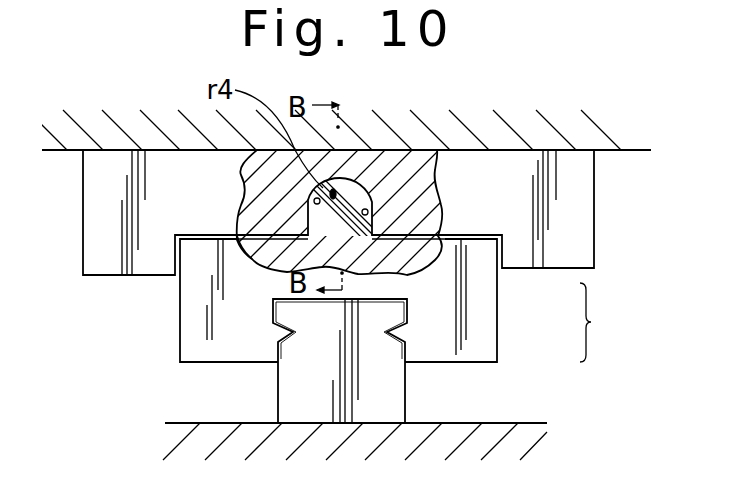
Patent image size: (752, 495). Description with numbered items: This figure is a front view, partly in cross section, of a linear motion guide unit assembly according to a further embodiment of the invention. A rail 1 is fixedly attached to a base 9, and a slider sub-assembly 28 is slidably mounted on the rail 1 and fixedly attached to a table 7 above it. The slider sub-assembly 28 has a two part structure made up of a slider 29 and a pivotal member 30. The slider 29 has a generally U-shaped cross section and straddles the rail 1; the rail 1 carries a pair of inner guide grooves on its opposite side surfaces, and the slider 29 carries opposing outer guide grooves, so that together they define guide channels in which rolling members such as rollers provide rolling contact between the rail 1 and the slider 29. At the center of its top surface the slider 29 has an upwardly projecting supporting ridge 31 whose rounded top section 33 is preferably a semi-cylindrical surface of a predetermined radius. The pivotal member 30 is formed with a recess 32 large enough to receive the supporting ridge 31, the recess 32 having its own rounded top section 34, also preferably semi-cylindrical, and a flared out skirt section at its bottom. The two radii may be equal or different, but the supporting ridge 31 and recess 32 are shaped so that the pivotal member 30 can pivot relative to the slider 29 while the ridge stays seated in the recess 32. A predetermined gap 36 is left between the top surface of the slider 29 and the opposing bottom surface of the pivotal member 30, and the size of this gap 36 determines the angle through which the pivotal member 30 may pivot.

The rail 1 is at (288, 388).
The table 7 is at (521, 118).
The base 9 is at (425, 471).
The slider sub-assembly 28 is at (606, 322).
The slider 29 is at (483, 345).
The pivotal member 30 is at (533, 269).
The supporting ridge 31 is at (367, 168).
The recess 32 is at (367, 212).
The rounded top section 33 is at (341, 178).
The rounded top section 34 is at (313, 206).
The gap 36 is at (240, 241).